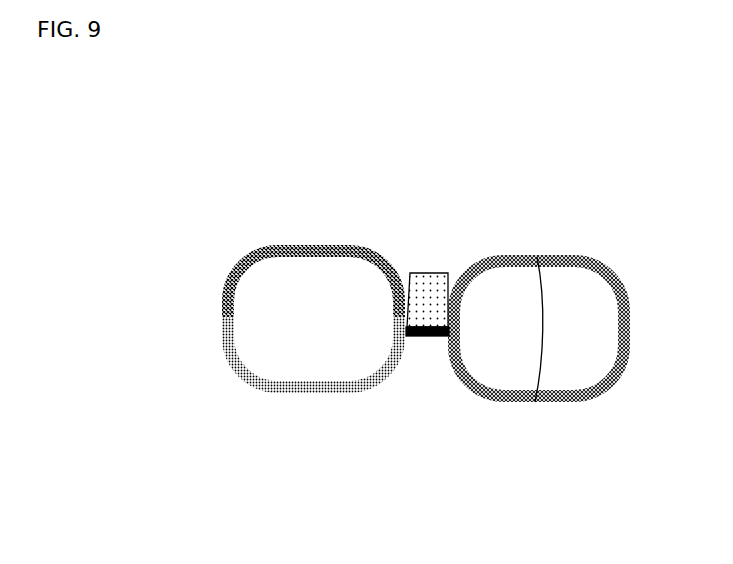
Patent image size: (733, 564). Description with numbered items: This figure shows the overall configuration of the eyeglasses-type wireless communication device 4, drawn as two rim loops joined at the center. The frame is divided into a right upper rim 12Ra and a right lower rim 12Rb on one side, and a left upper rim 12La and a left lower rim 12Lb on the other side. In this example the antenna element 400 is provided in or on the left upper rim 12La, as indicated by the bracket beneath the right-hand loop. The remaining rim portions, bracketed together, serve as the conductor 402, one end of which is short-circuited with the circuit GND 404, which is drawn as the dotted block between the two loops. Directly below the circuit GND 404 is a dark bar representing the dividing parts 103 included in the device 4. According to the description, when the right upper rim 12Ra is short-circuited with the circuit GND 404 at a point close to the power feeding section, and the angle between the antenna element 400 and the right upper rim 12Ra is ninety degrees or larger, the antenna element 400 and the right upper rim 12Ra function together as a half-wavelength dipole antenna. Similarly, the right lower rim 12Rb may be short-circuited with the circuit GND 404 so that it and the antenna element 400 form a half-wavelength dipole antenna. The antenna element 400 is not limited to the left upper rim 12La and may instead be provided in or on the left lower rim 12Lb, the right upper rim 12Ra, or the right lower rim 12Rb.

The wireless communication device 4 is at (550, 122).
The right upper rim 12Ra is at (228, 287).
The right lower rim 12Rb is at (326, 393).
The left upper rim 12La is at (535, 402).
The left lower rim 12Lb is at (483, 393).
The conductor 402 is at (507, 489).
The antenna element 400 is at (565, 489).
The circuit GND 404 is at (428, 279).
The dividing parts 103 is at (426, 342).